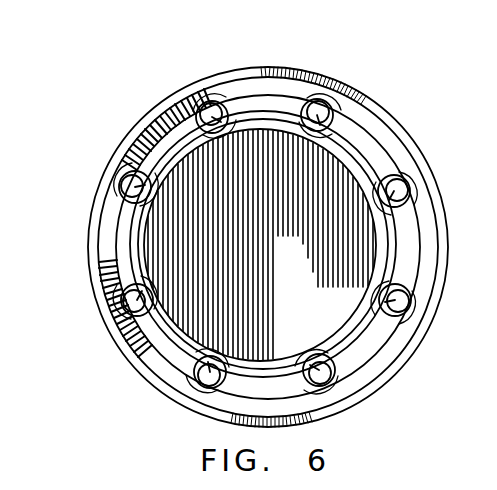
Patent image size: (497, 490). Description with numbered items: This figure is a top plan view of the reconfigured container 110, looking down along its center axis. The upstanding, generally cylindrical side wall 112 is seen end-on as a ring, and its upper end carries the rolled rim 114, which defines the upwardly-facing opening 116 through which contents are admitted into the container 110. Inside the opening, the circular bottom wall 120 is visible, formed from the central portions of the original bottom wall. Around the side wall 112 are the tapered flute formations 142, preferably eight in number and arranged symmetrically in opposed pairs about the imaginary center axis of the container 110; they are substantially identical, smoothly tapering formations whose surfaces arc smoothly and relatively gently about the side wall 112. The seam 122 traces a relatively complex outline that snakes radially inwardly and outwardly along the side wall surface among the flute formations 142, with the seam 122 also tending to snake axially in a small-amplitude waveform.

The container 110 is at (193, 41).
The side wall 112 is at (283, 90).
The rolled rim 114 is at (180, 97).
The opening 116 is at (155, 343).
The bottom wall 120 is at (308, 313).
The seam 122 is at (341, 183).
The flute formations 142 is at (248, 93).